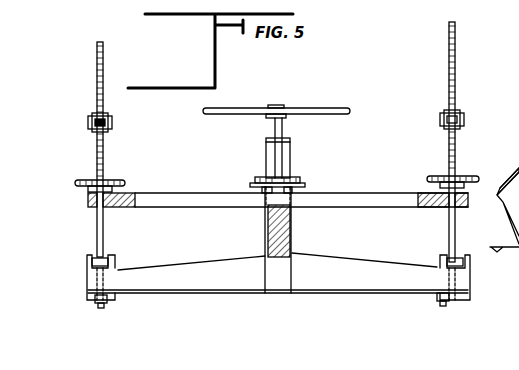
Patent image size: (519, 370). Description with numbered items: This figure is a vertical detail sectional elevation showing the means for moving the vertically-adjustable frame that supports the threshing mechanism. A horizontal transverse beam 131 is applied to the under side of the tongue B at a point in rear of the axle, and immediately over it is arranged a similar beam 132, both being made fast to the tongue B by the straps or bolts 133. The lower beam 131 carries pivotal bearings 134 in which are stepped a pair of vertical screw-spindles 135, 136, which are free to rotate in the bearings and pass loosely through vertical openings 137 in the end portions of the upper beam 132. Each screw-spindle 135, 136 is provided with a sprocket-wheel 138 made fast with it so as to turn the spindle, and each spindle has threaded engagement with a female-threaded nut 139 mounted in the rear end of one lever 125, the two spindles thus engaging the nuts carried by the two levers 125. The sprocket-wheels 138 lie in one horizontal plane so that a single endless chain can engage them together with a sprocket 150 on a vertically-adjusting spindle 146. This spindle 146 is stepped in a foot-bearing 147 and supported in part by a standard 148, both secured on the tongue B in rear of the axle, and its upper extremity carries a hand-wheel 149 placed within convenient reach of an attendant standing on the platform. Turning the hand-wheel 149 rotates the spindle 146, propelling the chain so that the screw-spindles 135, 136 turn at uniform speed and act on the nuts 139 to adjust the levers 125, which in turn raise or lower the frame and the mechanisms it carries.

The lever 125 is at (104, 128).
The horizontal transverse beam 131 is at (364, 268).
The beam 132 is at (356, 197).
The straps or bolts 133 is at (268, 242).
The pivotal bearing 134 is at (108, 258).
The screw-spindle 135 is at (460, 152).
The screw-spindle 136 is at (98, 158).
The vertical opening 137 is at (90, 210).
The sprocket-wheel 138 is at (122, 180).
The female-threaded nut 139 is at (95, 118).
The vertically-adjusting spindle 146 is at (283, 158).
The foot-bearing 147 is at (258, 186).
The standard 148 is at (267, 147).
The hand-wheel 149 is at (328, 101).
The sprocket 150 is at (258, 180).
The tongue B is at (292, 236).